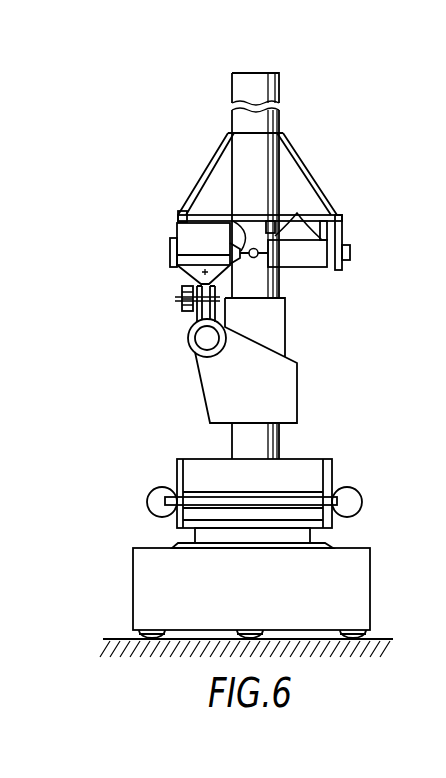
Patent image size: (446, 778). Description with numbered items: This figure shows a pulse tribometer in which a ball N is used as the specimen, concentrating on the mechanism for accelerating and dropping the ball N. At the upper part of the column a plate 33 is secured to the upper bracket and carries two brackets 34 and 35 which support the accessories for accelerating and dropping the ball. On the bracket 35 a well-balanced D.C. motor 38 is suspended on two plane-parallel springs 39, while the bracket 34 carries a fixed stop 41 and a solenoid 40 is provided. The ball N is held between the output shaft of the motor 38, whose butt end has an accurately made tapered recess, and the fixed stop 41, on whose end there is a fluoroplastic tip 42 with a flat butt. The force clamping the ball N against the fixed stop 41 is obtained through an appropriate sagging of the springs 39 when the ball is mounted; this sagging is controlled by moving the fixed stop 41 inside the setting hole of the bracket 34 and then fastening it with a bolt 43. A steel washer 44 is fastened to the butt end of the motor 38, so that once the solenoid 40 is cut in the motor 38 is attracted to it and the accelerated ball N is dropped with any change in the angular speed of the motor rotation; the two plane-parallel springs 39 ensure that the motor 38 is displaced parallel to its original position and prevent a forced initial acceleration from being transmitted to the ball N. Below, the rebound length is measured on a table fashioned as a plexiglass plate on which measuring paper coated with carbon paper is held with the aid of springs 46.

The plate 33 is at (179, 213).
The bracket 34 is at (177, 224).
The bracket 35 is at (267, 216).
The D.C. motor 38 is at (297, 258).
The plane-parallel springs 39 is at (298, 217).
The solenoid 40 is at (352, 259).
The fixed stop 41 is at (171, 266).
The fluoroplastic tip 42 is at (233, 210).
The bolt 43 is at (182, 292).
The steel washer 44 is at (333, 247).
The springs 46 is at (160, 495).
The ball N is at (253, 258).